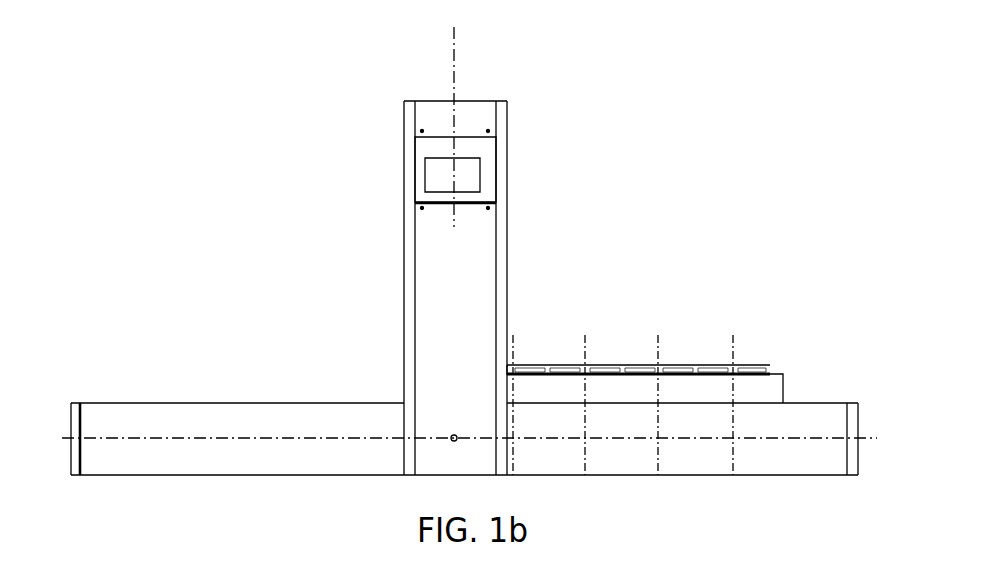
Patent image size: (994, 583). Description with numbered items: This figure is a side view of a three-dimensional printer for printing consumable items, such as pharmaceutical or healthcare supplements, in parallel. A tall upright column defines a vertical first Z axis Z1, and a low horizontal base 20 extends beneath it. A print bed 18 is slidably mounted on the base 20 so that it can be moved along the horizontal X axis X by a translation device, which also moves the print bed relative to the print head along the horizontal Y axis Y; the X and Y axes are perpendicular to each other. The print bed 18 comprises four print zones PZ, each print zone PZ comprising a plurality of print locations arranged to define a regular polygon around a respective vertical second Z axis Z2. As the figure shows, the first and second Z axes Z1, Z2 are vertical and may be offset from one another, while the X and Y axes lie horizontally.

The print bed 18 is at (688, 392).
The base 20 is at (230, 420).
The first Z axis Z1 is at (472, 125).
The second Z axis Z2 is at (626, 390).
The print zone PZ is at (540, 364).
The X axis X is at (483, 440).
The Y axis Y is at (454, 434).